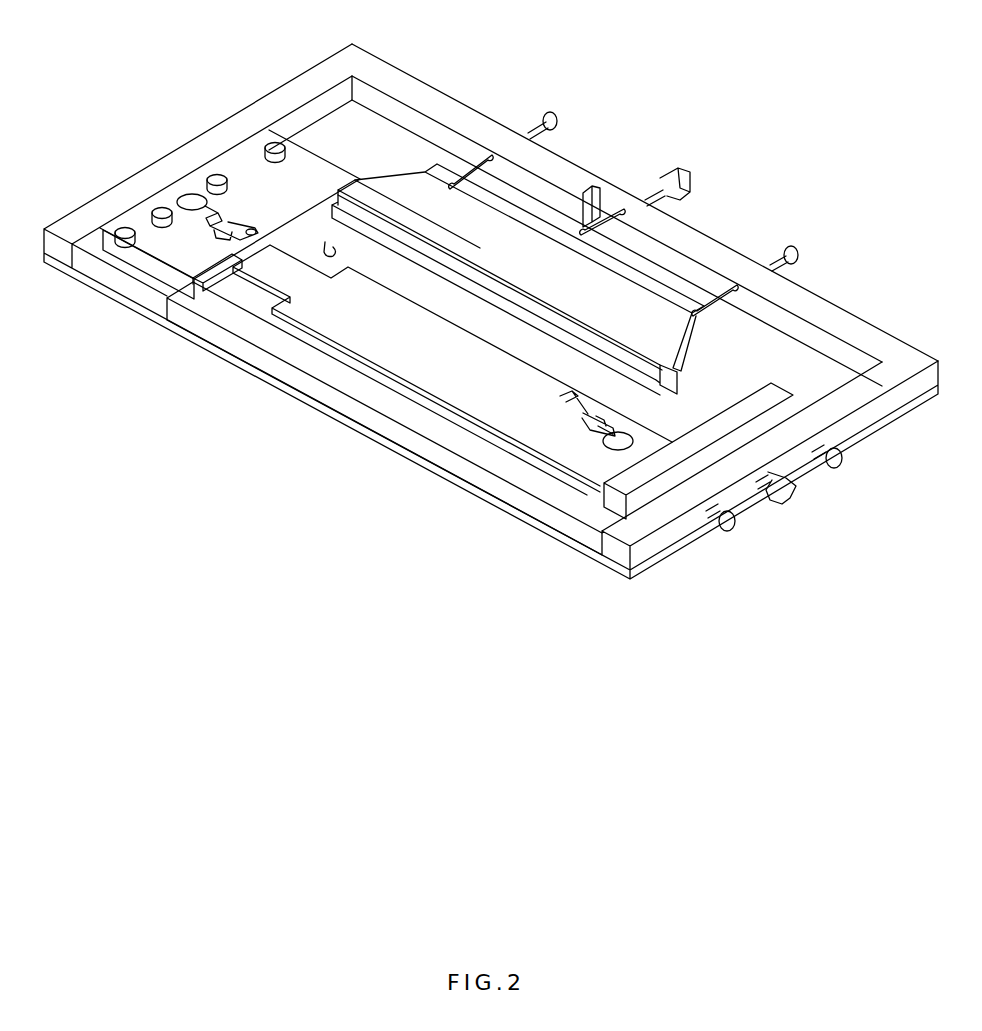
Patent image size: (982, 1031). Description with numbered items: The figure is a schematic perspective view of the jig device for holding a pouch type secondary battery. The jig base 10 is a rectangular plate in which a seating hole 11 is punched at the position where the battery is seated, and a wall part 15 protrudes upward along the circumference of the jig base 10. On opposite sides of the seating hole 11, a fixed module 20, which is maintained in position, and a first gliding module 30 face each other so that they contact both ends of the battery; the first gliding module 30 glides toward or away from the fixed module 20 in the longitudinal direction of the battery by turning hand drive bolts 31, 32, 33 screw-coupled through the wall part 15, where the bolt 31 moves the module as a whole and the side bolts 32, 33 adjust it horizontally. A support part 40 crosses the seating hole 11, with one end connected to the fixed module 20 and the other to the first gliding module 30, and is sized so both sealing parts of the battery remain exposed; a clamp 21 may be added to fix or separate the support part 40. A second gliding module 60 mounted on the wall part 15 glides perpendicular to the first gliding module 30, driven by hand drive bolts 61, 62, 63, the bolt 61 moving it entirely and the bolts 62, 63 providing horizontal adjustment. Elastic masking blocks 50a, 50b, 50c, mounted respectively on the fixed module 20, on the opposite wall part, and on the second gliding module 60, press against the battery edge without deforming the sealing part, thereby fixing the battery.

The jig base 10 is at (125, 197).
The seating hole 11 is at (325, 242).
The wall part 15 is at (705, 247).
The fixed module 20 is at (250, 170).
The clamp 21 is at (208, 236).
The first gliding module 30 is at (582, 466).
The hand drive bolt 31 is at (783, 498).
The hand drive bolt 32 is at (735, 525).
The hand drive bolt 33 is at (840, 465).
The support part 40 is at (395, 340).
The masking block 50a is at (208, 268).
The masking block 50b is at (410, 400).
The masking block 50c is at (380, 220).
The second gliding module 60 is at (500, 243).
The hand drive bolt 61 is at (676, 183).
The hand drive bolt 62 is at (578, 104).
The hand drive bolt 63 is at (797, 253).